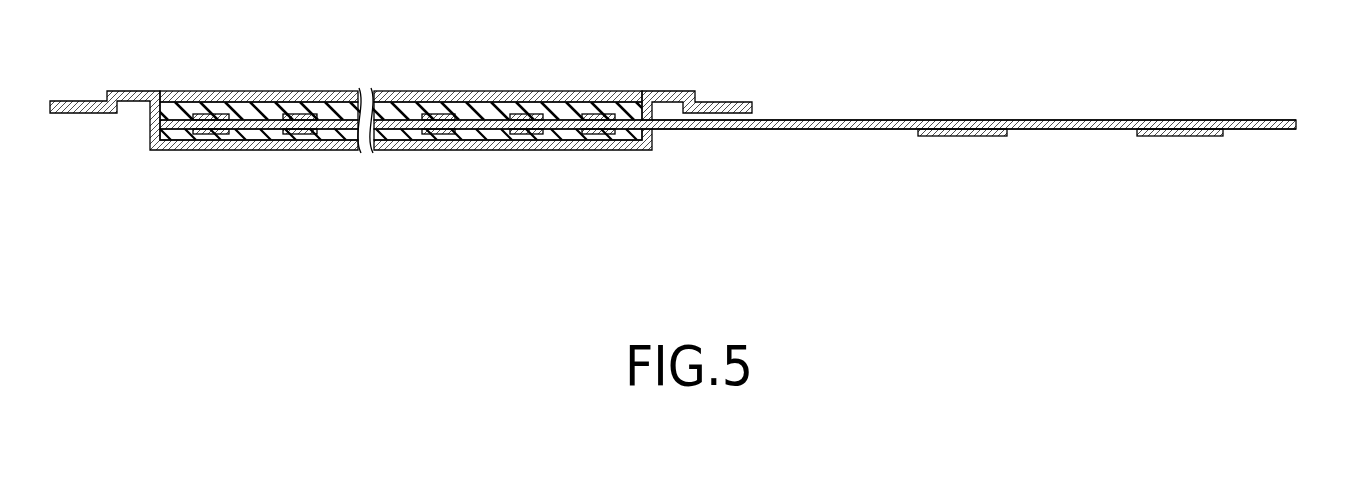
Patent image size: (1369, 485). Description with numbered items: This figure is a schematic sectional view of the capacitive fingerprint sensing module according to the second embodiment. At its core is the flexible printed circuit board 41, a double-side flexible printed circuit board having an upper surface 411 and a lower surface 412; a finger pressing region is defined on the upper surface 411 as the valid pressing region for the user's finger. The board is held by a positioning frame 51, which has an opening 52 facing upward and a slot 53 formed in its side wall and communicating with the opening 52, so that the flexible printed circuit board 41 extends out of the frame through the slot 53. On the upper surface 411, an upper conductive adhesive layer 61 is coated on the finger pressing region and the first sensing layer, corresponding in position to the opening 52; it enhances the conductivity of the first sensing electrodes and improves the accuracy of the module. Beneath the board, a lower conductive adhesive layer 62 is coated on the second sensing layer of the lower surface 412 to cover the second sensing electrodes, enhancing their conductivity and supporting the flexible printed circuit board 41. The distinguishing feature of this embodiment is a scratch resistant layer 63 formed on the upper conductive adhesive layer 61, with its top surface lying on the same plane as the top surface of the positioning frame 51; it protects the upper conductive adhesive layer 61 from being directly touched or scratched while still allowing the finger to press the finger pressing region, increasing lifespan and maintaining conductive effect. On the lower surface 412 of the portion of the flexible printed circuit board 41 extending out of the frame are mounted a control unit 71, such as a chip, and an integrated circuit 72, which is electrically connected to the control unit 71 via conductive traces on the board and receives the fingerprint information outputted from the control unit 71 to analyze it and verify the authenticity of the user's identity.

The flexible printed circuit board 41 is at (857, 112).
The upper surface 411 is at (1247, 120).
The lower surface 412 is at (1260, 130).
The positioning frame 51 is at (192, 140).
The opening 52 is at (172, 103).
The slot 53 is at (640, 118).
The upper conductive adhesive layer 61 is at (337, 107).
The lower conductive adhesive layer 62 is at (607, 133).
The scratch resistant layer 63 is at (487, 98).
The control unit 71 is at (961, 136).
The integrated circuit 72 is at (1177, 136).